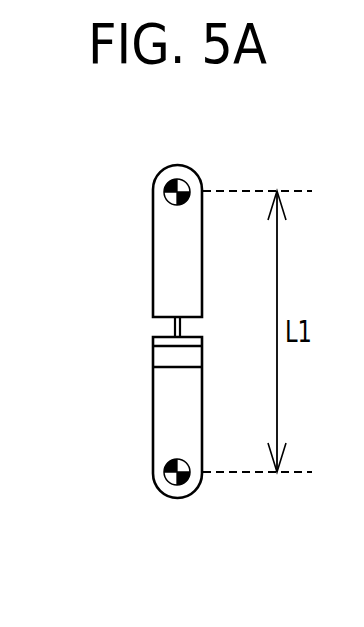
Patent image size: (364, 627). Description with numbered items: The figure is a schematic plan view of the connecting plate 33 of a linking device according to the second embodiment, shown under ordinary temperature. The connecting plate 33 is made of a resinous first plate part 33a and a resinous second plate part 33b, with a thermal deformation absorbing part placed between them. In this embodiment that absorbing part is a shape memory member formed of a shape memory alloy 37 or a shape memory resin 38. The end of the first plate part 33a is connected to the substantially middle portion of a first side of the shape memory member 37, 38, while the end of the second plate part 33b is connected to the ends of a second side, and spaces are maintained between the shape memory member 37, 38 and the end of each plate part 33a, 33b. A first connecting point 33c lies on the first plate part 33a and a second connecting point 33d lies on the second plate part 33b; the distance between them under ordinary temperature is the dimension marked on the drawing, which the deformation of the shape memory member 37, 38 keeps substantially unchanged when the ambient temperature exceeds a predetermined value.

The connecting plate 33 is at (120, 210).
The first plate part 33a is at (163, 256).
The second plate part 33b is at (163, 429).
The first connecting point 33c is at (181, 188).
The second connecting point 33d is at (176, 479).
The shape memory alloy 37 is at (156, 337).
The shape memory resin 38 is at (177, 356).